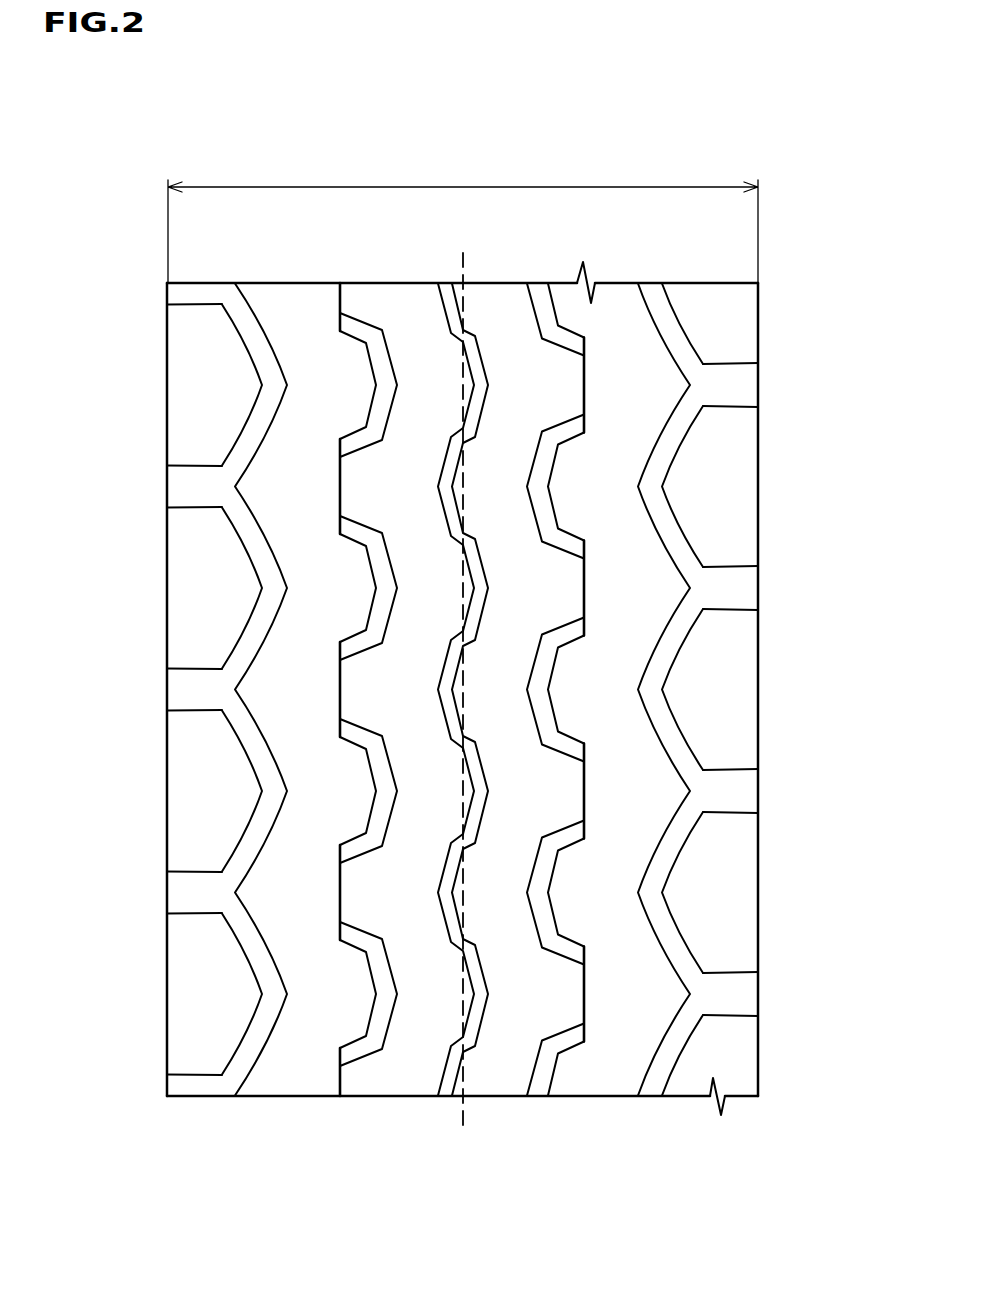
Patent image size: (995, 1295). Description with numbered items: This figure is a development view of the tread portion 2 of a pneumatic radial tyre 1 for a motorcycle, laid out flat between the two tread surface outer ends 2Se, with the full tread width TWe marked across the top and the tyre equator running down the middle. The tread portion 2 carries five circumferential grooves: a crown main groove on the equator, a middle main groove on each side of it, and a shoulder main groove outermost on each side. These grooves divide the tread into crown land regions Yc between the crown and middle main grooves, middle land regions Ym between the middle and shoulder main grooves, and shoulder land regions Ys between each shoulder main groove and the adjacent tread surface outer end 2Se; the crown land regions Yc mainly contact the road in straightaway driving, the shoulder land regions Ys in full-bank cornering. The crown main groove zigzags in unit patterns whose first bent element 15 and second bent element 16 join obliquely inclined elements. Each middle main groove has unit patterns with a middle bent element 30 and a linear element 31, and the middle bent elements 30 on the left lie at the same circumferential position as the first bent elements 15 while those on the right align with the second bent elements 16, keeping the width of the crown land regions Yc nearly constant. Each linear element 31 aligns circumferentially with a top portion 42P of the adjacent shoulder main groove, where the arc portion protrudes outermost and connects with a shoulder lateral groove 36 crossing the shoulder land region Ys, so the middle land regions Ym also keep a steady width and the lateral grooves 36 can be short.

The pneumatic radial tyre 1 is at (800, 124).
The tread portion 2 is at (724, 151).
The tread surface outer end 2Se is at (167, 326).
The tread width TWe is at (463, 218).
The middle bent element 30 is at (372, 573).
The linear element 31 is at (587, 588).
The first bent element 15 is at (487, 607).
The second bent element 16 is at (442, 670).
The shoulder lateral groove 36 is at (192, 692).
The top portion 42P is at (677, 607).
The shoulder land region Ys is at (218, 1002).
The middle land region Ym is at (353, 1014).
The crown land region Yc is at (447, 1014).